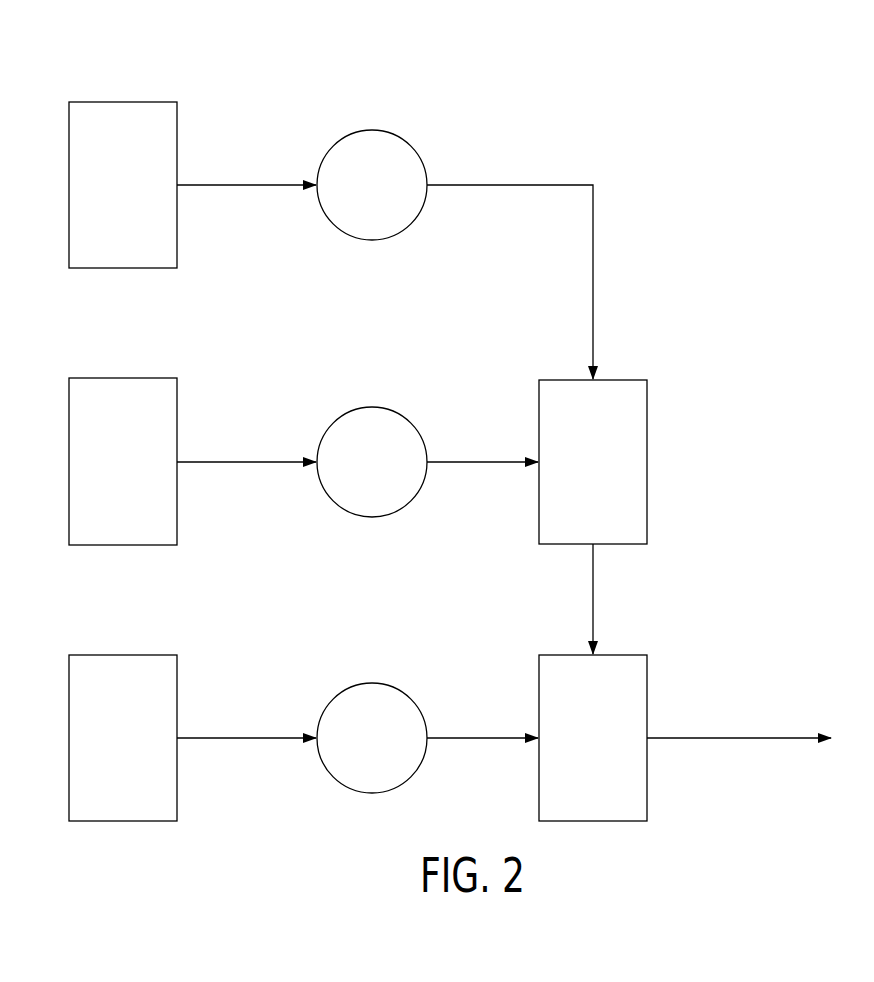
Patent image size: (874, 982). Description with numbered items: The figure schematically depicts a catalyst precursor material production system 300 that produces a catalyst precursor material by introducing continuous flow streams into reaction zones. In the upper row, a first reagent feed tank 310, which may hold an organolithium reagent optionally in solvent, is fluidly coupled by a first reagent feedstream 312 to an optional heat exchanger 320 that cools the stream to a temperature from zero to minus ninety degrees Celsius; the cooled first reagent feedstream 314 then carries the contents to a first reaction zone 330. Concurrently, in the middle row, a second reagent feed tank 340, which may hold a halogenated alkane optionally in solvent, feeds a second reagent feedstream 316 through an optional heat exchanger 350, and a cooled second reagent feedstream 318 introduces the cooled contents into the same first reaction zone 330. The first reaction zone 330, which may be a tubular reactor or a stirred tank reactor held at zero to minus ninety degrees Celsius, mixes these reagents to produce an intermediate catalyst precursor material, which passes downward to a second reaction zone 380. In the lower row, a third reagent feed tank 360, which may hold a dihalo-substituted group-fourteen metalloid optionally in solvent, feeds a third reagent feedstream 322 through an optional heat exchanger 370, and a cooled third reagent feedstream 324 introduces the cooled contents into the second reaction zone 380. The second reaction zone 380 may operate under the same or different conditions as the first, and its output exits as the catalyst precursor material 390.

The catalyst precursor material production system 300 is at (818, 212).
The first reagent feed tank 310 is at (122, 101).
The first reagent feedstream 312 is at (240, 183).
The cooled first reagent feedstream 314 is at (477, 182).
The second reagent feedstream 316 is at (240, 460).
The cooled second reagent feedstream 318 is at (477, 458).
The heat exchanger 320 is at (370, 128).
The third reagent feedstream 322 is at (240, 737).
The cooled third reagent feedstream 324 is at (477, 735).
The first reaction zone 330 is at (648, 413).
The second reagent feed tank 340 is at (122, 378).
The heat exchanger 350 is at (370, 407).
The third reagent feed tank 360 is at (122, 655).
The heat exchanger 370 is at (370, 683).
The second reaction zone 380 is at (648, 690).
The catalyst precursor material 390 is at (738, 735).